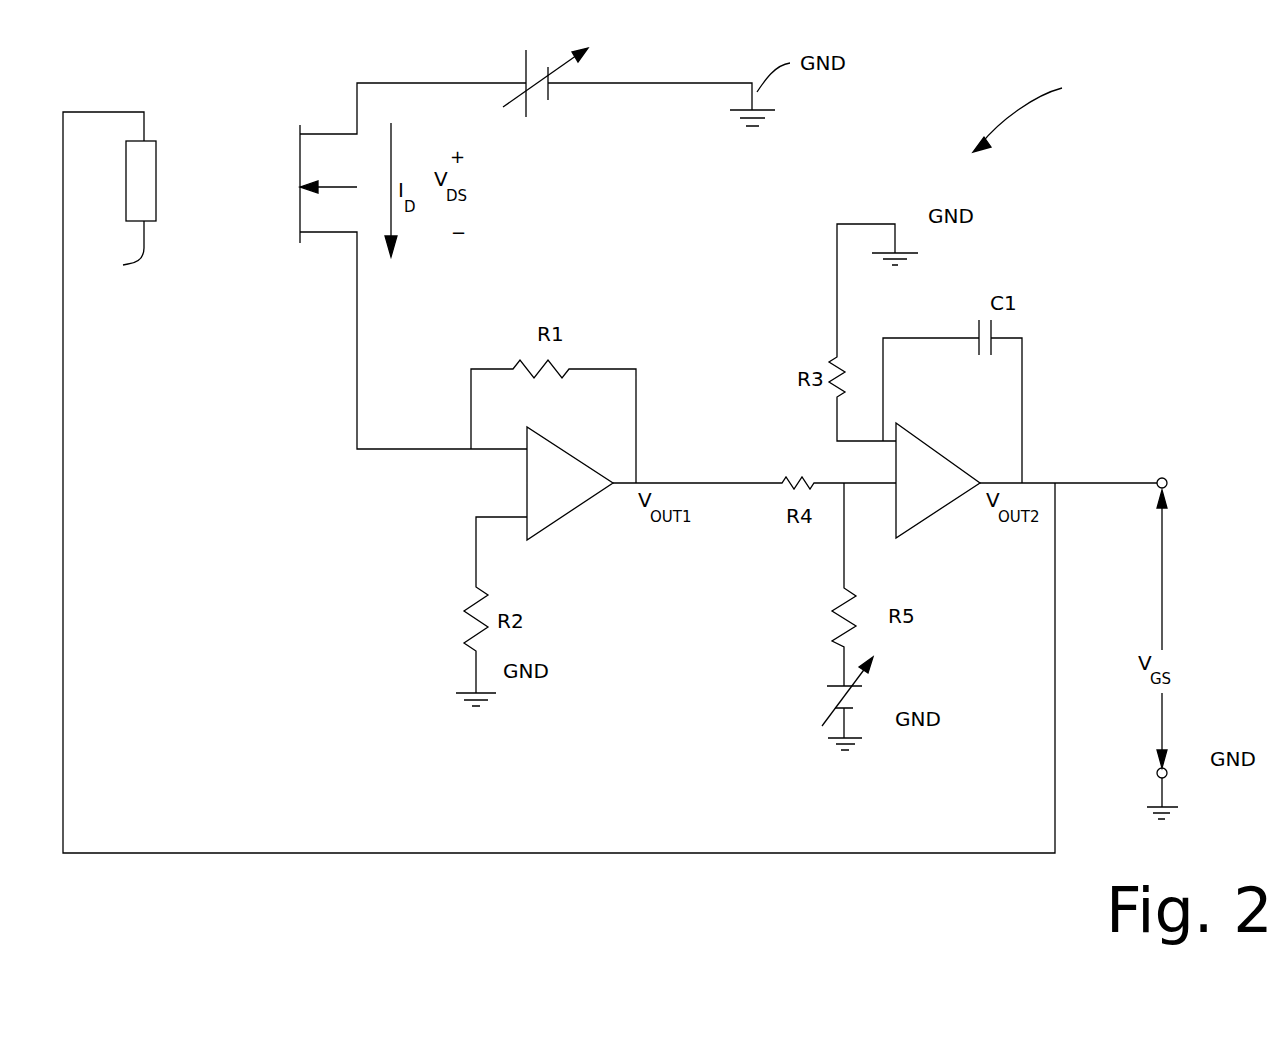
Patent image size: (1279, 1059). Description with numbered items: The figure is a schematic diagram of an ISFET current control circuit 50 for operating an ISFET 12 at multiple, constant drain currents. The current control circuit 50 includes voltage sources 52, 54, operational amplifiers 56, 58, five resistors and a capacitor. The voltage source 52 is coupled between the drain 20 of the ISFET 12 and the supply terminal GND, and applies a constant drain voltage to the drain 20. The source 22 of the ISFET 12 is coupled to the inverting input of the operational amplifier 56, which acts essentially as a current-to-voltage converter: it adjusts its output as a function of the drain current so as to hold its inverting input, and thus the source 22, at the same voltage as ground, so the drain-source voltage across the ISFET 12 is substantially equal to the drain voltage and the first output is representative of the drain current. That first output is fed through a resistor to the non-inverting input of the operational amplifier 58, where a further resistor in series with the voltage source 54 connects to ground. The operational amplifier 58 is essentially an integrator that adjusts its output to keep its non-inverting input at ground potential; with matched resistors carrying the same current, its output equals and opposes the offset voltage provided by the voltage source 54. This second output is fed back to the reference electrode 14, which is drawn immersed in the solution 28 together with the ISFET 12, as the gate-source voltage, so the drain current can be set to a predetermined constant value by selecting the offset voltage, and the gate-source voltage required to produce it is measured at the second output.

The ISFET 12 is at (298, 128).
The reference electrode 14 is at (126, 211).
The drain 20 is at (317, 133).
The source 22 is at (345, 234).
The solution 28 is at (217, 244).
The current control circuit 50 is at (1036, 111).
The voltage source 52 is at (522, 72).
The voltage source 54 is at (870, 696).
The operational amplifier 56 is at (545, 529).
The operational amplifier 58 is at (923, 528).